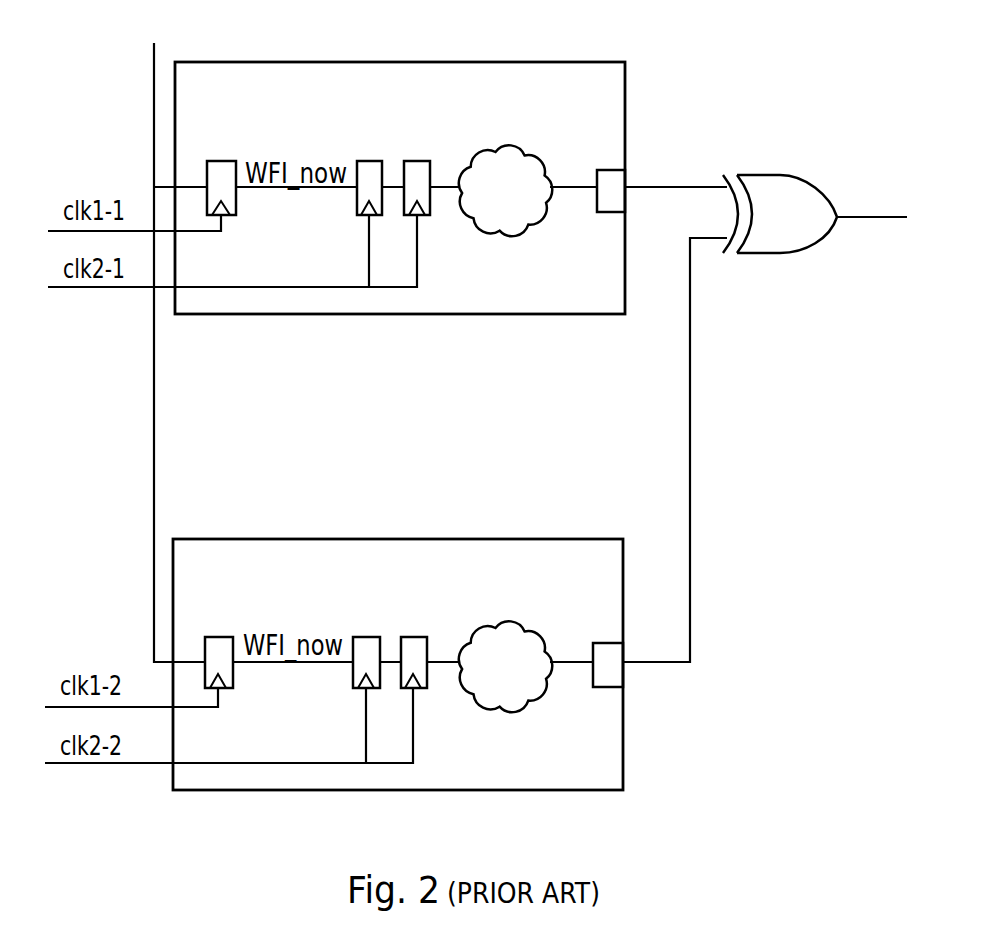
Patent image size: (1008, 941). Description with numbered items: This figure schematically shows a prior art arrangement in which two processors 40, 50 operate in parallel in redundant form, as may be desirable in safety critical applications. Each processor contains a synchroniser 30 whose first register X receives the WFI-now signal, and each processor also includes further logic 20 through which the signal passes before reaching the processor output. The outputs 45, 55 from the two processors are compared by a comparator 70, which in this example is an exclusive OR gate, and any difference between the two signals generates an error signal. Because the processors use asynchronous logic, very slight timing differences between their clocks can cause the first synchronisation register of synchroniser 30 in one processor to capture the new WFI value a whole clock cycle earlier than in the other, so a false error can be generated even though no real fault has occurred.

The processing logic cloud 20 is at (520, 147).
The synchroniser 30 is at (432, 132).
The processor 40 is at (575, 63).
The output 45 is at (612, 180).
The processor 50 is at (573, 540).
The output 55 is at (612, 680).
The comparator 70 is at (793, 180).